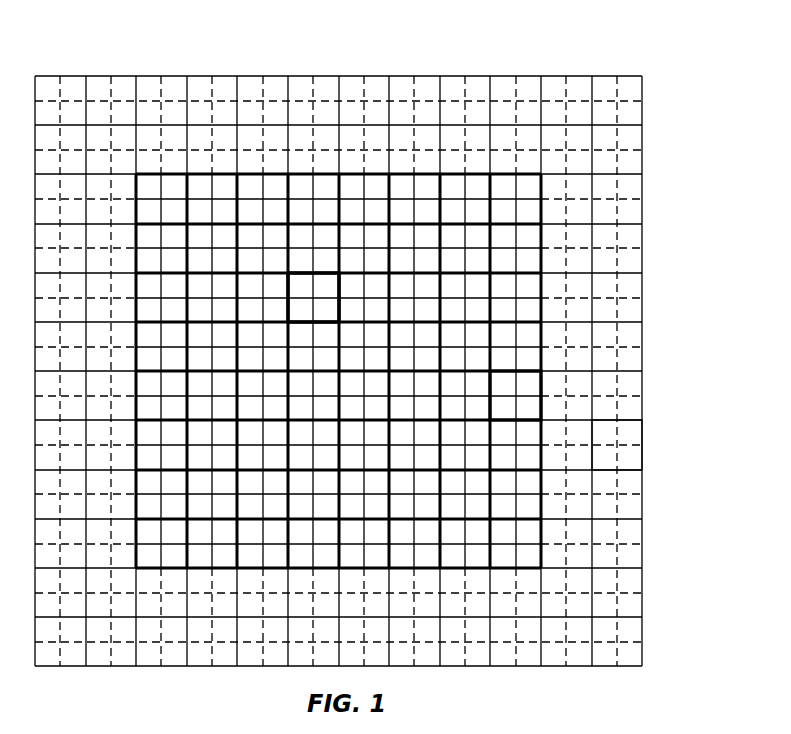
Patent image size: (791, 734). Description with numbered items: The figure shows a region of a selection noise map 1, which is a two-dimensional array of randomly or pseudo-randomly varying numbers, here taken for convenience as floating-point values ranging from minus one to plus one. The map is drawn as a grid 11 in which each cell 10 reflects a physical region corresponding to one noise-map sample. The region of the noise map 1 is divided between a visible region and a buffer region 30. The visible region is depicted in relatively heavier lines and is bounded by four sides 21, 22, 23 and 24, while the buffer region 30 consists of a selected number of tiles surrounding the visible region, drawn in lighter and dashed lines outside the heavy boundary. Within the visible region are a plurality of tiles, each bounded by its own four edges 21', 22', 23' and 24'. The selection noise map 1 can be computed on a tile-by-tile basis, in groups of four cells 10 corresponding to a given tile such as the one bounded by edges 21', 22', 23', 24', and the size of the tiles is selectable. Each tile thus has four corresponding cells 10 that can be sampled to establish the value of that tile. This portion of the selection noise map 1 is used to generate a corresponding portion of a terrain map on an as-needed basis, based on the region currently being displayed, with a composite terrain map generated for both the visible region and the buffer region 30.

The noise map 1 is at (400, 364).
The cell 10 is at (296, 283).
The grid 11 is at (618, 96).
The buffer region 30 is at (642, 210).
The side 21 is at (97, 371).
The side 22 is at (573, 371).
The side 23 is at (338, 155).
The side 24 is at (338, 587).
The tile side 21' is at (249, 297).
The tile side 22' is at (373, 297).
The tile side 23' is at (333, 255).
The tile side 24' is at (330, 340).